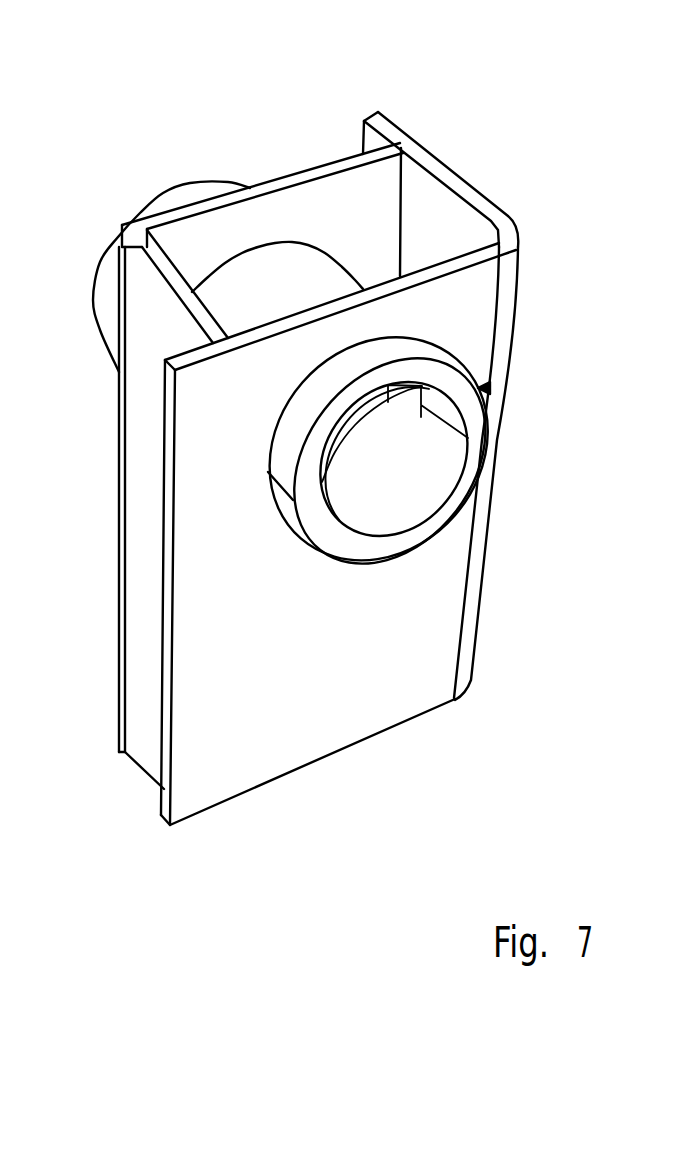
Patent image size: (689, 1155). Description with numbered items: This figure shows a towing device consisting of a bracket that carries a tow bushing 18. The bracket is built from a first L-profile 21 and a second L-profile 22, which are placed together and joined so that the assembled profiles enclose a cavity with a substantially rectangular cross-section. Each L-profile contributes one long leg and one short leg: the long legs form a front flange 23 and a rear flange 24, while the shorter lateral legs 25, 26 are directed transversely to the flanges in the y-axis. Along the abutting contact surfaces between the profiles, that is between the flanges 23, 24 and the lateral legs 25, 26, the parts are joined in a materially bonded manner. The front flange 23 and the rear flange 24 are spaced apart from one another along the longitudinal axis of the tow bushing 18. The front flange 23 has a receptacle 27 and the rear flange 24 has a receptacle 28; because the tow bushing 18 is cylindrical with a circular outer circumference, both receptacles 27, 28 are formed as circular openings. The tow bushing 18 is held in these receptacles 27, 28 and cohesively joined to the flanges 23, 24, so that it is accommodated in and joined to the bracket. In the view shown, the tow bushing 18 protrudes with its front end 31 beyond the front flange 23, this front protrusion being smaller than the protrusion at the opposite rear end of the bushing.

The tow bushing 18 is at (413, 350).
The first L-profile 21 is at (427, 611).
The second L-profile 22 is at (284, 173).
The front flange 23 is at (197, 680).
The rear flange 24 is at (318, 203).
The lateral leg 25 is at (452, 170).
The lateral leg 26 is at (138, 352).
The receptacle 27 is at (266, 476).
The receptacle 28 is at (222, 262).
The front end 31 is at (491, 389).